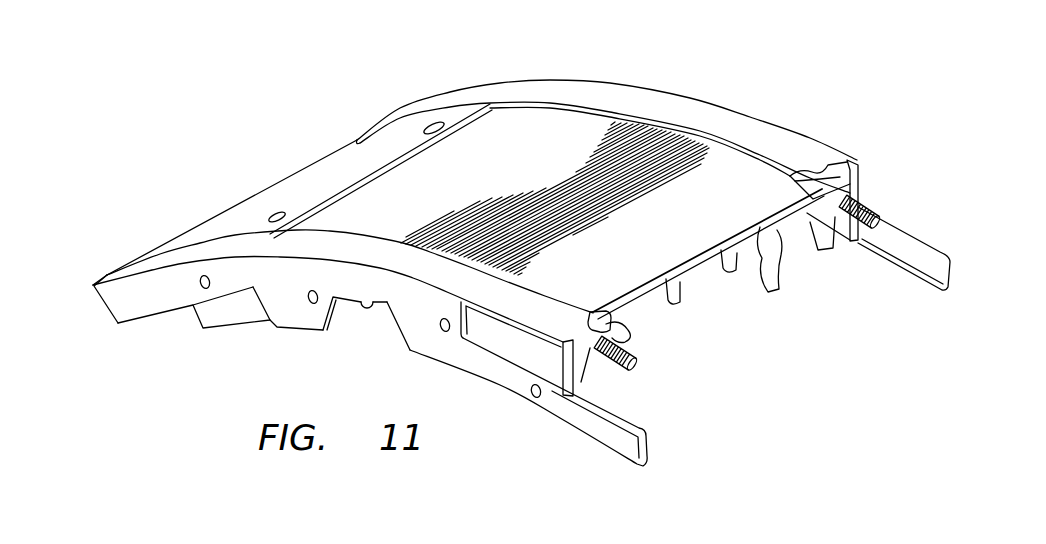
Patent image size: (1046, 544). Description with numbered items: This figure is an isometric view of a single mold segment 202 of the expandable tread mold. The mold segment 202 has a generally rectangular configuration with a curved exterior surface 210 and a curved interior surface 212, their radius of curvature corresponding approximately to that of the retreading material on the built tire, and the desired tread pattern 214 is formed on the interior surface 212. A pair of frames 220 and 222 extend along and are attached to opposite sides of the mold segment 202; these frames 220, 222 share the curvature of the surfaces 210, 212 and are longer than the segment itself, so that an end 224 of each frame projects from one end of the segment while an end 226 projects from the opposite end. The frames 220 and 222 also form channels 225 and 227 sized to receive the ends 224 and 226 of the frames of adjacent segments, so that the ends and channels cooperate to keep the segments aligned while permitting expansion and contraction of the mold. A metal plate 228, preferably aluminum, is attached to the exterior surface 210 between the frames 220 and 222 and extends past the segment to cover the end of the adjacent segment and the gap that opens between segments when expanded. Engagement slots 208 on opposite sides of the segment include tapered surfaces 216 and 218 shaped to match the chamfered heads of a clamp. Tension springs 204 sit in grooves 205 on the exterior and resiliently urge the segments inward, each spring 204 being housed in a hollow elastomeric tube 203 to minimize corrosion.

The mold segment 202 is at (626, 70).
The hollow elastomeric tube 203 is at (620, 336).
The tension spring 204 is at (630, 367).
The groove 205 is at (601, 311).
The engagement slot 208 is at (375, 305).
The exterior surface 210 is at (720, 157).
The interior surface 212 is at (706, 276).
The tread pattern 214 is at (773, 250).
The tapered surface 216 is at (333, 322).
The tapered surface 218 is at (393, 332).
The frame 220 is at (183, 250).
The frame 222 is at (522, 88).
The end 224 is at (400, 115).
The channel 225 is at (528, 358).
The end 226 is at (627, 450).
The channel 227 is at (227, 318).
The metal plate 228 is at (290, 177).